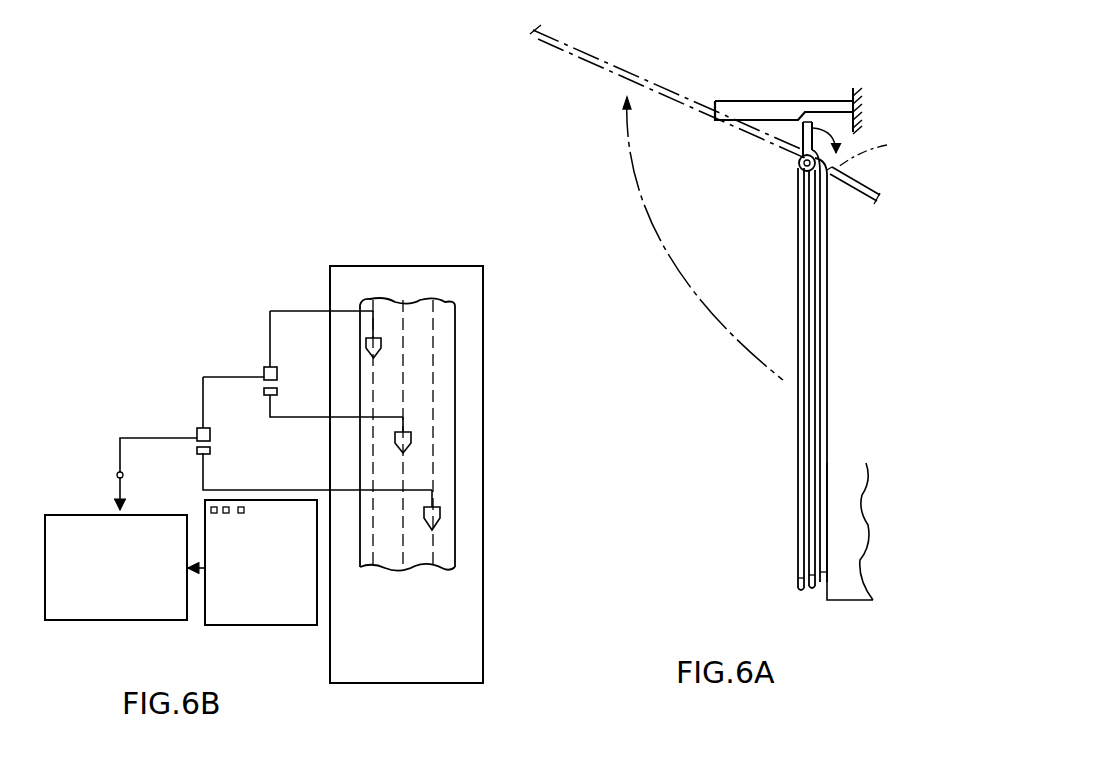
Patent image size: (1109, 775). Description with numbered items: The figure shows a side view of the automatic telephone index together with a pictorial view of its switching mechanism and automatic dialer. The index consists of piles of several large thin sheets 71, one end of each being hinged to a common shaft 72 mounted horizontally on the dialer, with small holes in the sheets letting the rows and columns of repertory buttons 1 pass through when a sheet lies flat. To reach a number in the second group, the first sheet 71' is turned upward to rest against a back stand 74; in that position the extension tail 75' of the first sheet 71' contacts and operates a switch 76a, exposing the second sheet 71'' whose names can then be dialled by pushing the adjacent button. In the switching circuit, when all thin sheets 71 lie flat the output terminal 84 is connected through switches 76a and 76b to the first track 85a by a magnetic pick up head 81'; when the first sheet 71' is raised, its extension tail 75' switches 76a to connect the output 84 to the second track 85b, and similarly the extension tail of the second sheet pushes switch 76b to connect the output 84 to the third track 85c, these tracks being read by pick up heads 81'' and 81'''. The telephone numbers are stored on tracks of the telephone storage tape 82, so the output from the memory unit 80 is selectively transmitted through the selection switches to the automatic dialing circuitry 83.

In FIG. 6B, the repertory buttons 1 is at (226, 510).
In FIG. 6A, the thin sheets 71 is at (768, 379).
In FIG. 6A, the first sheet 71' is at (671, 306).
In FIG. 6A, the second sheet 71'' is at (775, 366).
In FIG. 6A, the common shaft 72 is at (798, 168).
In FIG. 6A, the back stand 74 is at (757, 107).
In FIG. 6A, the extension tail 75' is at (814, 148).
In FIG. 6A, the switch 76a is at (863, 190).
In FIG. 6B, the switch 76a is at (264, 370).
In FIG. 6B, the switch 76b is at (197, 431).
In FIG. 6B, the memory unit 80 is at (483, 616).
In FIG. 6B, the magnetic pick up head 81' is at (334, 334).
In FIG. 6B, the magnetic pick up head 81'' is at (342, 435).
In FIG. 6B, the magnetic pick up head 81''' is at (479, 506).
In FIG. 6B, the telephone storage tape 82 is at (455, 518).
In FIG. 6B, the automatic dialing circuitry 83 is at (93, 500).
In FIG. 6B, the output terminal 84 is at (117, 474).
In FIG. 6B, the first track 85a is at (373, 376).
In FIG. 6B, the second track 85b is at (403, 372).
In FIG. 6B, the third track 85c is at (433, 408).